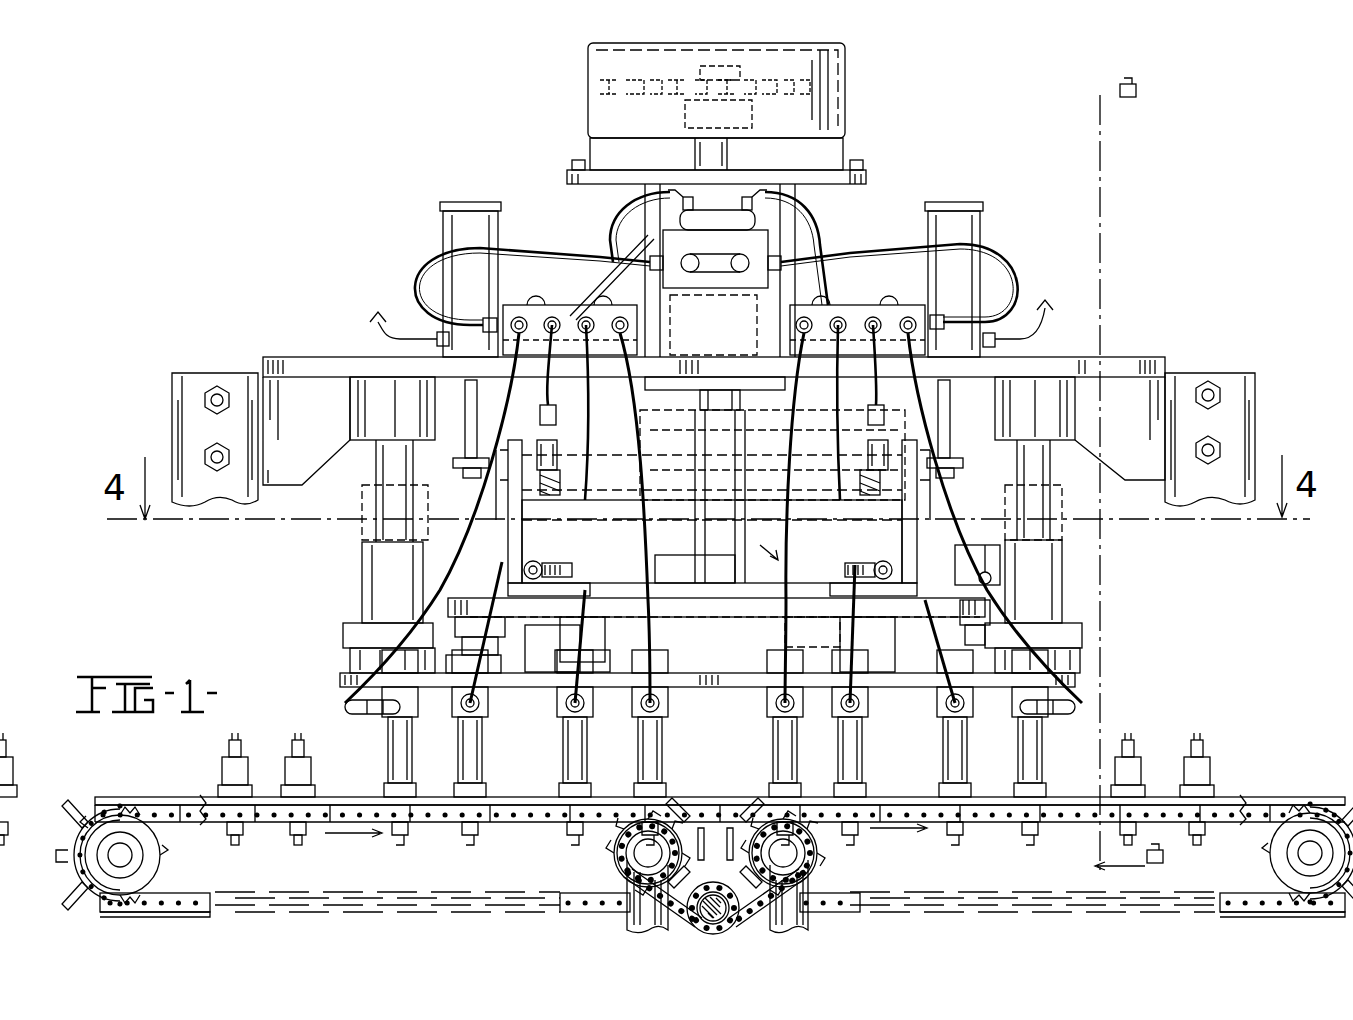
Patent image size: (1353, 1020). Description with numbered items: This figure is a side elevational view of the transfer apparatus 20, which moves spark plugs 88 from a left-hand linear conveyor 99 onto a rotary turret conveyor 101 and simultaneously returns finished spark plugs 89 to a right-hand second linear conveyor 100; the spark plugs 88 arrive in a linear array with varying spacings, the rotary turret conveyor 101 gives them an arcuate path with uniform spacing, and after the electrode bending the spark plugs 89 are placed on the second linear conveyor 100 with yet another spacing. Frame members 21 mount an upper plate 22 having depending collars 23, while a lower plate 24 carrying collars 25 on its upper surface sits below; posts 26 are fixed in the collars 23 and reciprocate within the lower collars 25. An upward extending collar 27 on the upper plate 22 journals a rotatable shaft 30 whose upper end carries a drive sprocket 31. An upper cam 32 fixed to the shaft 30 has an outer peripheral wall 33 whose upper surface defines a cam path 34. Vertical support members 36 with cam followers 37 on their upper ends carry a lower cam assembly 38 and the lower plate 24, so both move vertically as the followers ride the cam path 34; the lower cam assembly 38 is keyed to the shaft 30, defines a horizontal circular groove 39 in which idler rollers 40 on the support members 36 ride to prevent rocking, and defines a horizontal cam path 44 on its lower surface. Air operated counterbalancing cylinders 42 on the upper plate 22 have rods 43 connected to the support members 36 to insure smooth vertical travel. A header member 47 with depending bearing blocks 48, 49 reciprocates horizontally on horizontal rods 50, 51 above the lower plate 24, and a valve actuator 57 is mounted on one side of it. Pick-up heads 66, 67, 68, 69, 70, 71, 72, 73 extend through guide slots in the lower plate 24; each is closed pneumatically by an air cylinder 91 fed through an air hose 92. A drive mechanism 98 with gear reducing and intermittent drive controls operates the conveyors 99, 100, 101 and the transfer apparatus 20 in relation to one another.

The transfer apparatus 20 is at (1142, 350).
The frame members 21 is at (172, 428).
The upper plate 22 is at (1025, 352).
The depending collars 23 is at (350, 425).
The lower plate 24 is at (1080, 670).
The collars 25 is at (362, 593).
The posts 26 is at (378, 532).
The upward extending collar 27 is at (780, 222).
The rotatable shaft 30 is at (735, 160).
The drive sprocket 31 is at (620, 80).
The upper cam 32 is at (780, 487).
The outer peripheral wall 33 is at (560, 488).
The cam path 34 is at (622, 428).
The vertical support members 36 is at (508, 536).
The cam followers 37 is at (540, 475).
The lower cam assembly 38 is at (761, 542).
The horizontal circular groove 39 is at (672, 552).
The idler rollers 40 is at (570, 562).
The counterbalancing cylinders 42 is at (490, 230).
The rods 43 is at (462, 462).
The horizontal cam path 44 is at (765, 617).
The header member 47 is at (985, 587).
The bearing block 48 is at (500, 650).
The bearing block 49 is at (850, 650).
The horizontal rod 50 is at (580, 632).
The horizontal rod 51 is at (895, 632).
The valve actuator 57 is at (980, 623).
The pick-up head 66 is at (390, 725).
The pick-up head 67 is at (458, 726).
The pick-up head 68 is at (560, 727).
The pick-up head 69 is at (638, 727).
The pick-up head 70 is at (773, 723).
The pick-up head 71 is at (838, 727).
The pick-up head 72 is at (943, 722).
The pick-up head 73 is at (1018, 720).
The spark plugs 88 is at (300, 765).
The spark plugs 89 is at (795, 795).
The air cylinder 91 is at (357, 710).
The air hose 92 is at (418, 635).
The drive mechanism 98 is at (738, 910).
The linear conveyor 99 is at (205, 800).
The second linear conveyor 100 is at (1232, 800).
The rotary turret conveyor 101 is at (707, 795).